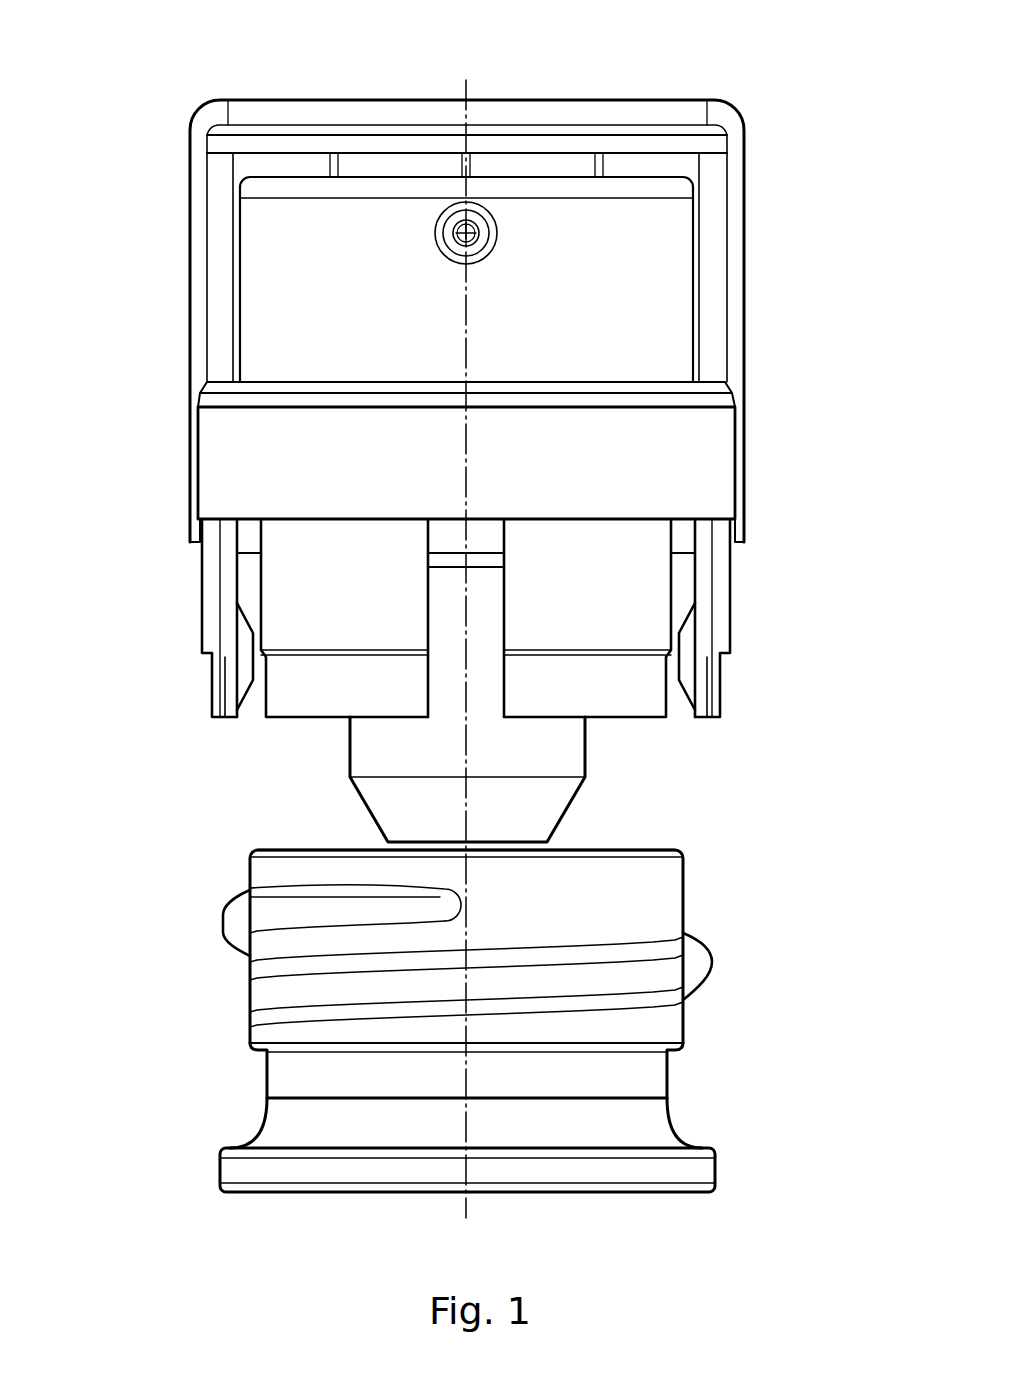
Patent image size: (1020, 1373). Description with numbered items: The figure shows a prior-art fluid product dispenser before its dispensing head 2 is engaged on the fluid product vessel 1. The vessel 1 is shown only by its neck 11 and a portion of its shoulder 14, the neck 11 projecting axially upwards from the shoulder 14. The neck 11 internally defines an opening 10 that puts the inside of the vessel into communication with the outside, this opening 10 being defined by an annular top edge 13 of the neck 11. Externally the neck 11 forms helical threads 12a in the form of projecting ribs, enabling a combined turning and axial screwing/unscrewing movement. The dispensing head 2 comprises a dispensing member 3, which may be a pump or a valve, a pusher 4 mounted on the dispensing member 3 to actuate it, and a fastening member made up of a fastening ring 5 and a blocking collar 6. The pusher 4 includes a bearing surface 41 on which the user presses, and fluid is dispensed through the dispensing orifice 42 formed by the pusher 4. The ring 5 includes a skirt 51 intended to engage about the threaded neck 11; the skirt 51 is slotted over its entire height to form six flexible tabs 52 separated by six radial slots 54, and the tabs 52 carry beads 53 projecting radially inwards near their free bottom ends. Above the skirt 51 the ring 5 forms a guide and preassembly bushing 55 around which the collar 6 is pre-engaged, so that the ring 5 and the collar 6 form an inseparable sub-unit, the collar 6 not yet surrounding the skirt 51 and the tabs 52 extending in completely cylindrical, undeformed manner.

The fluid product vessel 1 is at (453, 1009).
The dispensing head 2 is at (472, 389).
The dispensing member 3 is at (564, 753).
The pusher 4 is at (525, 207).
The fastening ring 5 is at (464, 457).
The blocking collar 6 is at (745, 320).
The opening 10 is at (577, 908).
The neck 11 is at (657, 1028).
The helical threads 12a is at (287, 997).
The annular top edge 13 is at (282, 848).
The shoulder 14 is at (230, 1148).
The bearing surface 41 is at (570, 177).
The dispensing orifice 42 is at (468, 226).
The skirt 51 is at (468, 645).
The flexible tabs 52 is at (723, 633).
The beads 53 is at (240, 690).
The radial slots 54 is at (457, 683).
The guide and preassembly bushing 55 is at (228, 460).